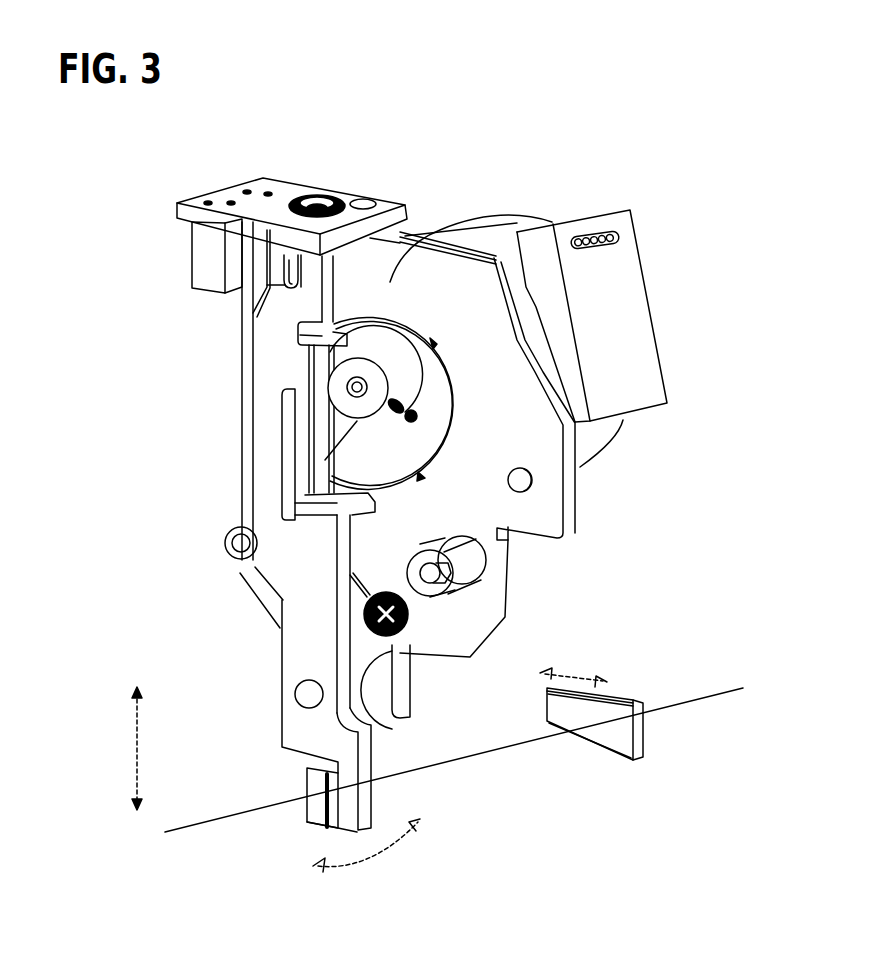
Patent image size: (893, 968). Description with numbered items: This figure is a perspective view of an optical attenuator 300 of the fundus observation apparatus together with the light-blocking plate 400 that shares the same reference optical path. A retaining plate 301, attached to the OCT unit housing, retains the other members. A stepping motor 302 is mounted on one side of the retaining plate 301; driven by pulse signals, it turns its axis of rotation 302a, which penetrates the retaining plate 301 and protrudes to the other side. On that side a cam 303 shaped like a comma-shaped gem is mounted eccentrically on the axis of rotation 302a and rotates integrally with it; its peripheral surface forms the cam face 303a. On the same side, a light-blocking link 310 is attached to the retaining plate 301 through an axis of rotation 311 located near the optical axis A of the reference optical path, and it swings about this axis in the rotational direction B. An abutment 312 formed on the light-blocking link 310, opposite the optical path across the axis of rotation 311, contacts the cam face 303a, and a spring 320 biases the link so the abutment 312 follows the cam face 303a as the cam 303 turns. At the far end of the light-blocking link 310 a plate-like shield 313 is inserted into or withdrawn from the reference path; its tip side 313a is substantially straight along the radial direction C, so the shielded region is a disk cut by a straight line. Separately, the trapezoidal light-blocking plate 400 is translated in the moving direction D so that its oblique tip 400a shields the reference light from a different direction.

The attenuator 300 is at (613, 180).
The retaining plate 301 is at (580, 510).
The stepping motor 302 is at (538, 217).
The axis of rotation 302a is at (350, 390).
The cam 303 is at (328, 464).
The cam face 303a is at (447, 412).
The light-blocking link 310 is at (258, 346).
The axis of rotation 311 is at (300, 696).
The abutment 312 is at (342, 337).
The shield 313 is at (312, 789).
The side 313a is at (297, 814).
The spring 320 is at (368, 601).
The light-blocking plate 400 is at (637, 692).
The tip 400a is at (590, 753).
The optical axis A is at (707, 702).
The rotational direction B is at (382, 862).
The radial direction C is at (130, 730).
The moving direction D is at (579, 668).